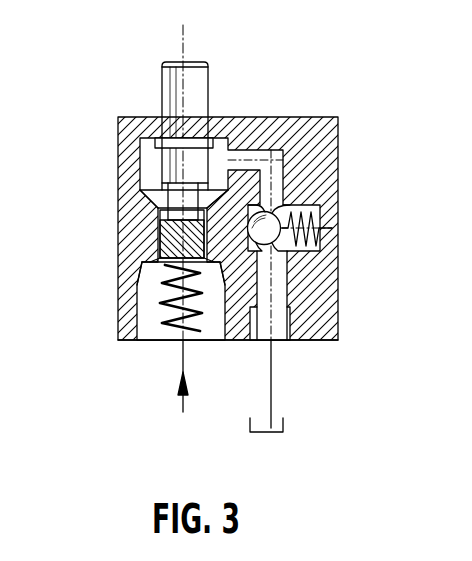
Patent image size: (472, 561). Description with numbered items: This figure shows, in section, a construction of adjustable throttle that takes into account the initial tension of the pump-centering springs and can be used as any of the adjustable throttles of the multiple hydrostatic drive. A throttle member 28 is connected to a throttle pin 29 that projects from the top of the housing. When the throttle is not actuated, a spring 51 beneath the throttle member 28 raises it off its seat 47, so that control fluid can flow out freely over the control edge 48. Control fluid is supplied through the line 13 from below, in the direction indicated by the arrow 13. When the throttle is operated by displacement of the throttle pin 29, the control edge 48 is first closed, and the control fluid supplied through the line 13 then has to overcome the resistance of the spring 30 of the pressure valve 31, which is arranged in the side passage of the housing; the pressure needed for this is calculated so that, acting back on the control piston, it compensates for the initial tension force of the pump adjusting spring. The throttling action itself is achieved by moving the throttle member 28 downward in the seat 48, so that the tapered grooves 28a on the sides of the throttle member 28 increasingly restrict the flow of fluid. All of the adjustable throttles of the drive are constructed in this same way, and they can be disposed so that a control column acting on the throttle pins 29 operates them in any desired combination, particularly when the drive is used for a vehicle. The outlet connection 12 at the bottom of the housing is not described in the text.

The outlet connection 12 is at (266, 409).
The line 13 is at (177, 405).
The throttle member 28 is at (165, 233).
The tapered grooves 28a is at (158, 258).
The throttle pin 29 is at (172, 77).
The spring 30 is at (280, 249).
The pressure valve 31 is at (339, 172).
The seat 47 is at (160, 270).
The control edge 48 is at (162, 186).
The spring 51 is at (152, 318).